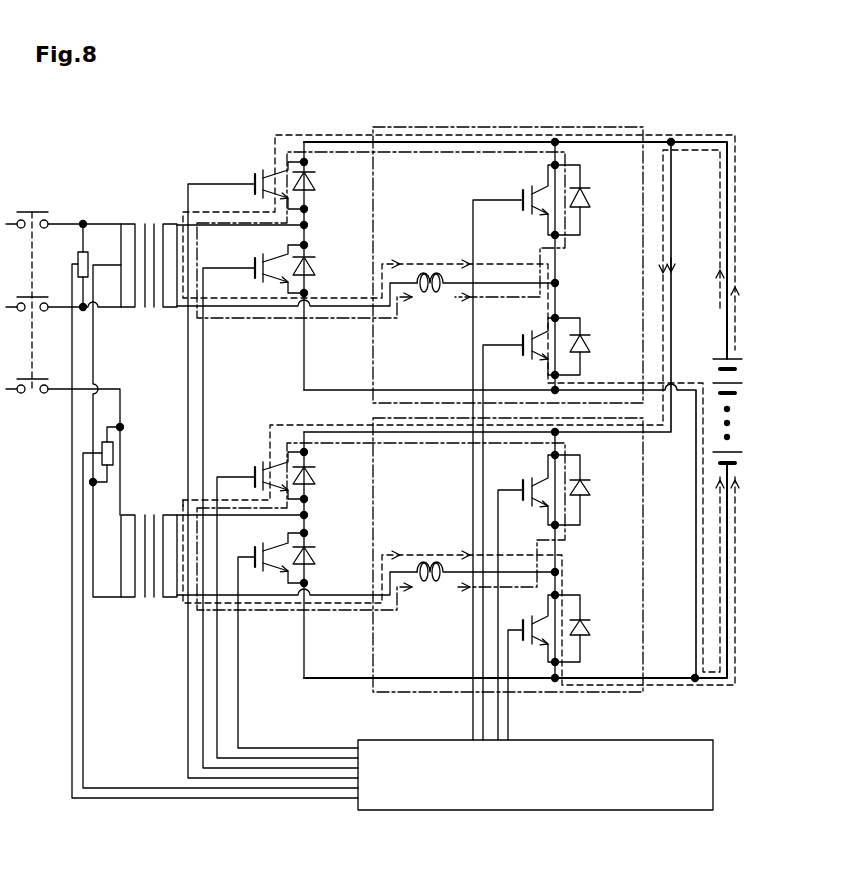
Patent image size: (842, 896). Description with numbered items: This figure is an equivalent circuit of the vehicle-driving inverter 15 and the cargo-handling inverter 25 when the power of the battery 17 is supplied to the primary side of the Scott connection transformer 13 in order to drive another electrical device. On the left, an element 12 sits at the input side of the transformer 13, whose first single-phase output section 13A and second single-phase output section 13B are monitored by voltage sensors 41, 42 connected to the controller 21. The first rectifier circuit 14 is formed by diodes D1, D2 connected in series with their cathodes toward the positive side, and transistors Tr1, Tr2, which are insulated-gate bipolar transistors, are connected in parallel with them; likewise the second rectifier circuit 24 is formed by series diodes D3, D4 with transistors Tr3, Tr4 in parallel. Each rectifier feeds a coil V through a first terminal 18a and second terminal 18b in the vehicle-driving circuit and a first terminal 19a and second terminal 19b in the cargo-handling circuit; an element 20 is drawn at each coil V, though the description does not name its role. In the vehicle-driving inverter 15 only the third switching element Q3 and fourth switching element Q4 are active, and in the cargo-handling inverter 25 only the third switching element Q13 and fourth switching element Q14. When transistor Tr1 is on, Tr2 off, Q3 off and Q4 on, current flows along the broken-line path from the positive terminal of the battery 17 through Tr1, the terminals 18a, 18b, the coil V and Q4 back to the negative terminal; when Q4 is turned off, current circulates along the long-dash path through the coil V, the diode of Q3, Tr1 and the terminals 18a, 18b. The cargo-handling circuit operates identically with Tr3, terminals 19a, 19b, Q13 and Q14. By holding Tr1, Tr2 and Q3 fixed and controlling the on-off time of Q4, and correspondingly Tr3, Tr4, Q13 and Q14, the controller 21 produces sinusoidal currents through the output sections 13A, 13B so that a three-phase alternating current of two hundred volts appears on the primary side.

The input switch 12 is at (35, 211).
The Scott connection transformer 13 is at (140, 377).
The first single-phase output section 13A is at (170, 222).
The second single-phase output section 13B is at (170, 513).
The first rectifier circuit 14 is at (278, 425).
The vehicle-driving inverter 15 is at (508, 421).
The battery 17 is at (719, 357).
The first terminal 18a is at (225, 212).
The second terminal 18b is at (258, 318).
The first terminal 19a is at (238, 507).
The second terminal 19b is at (266, 611).
The reactor coil 20 is at (344, 306).
The controller 21 is at (715, 776).
The second rectifier circuit 24 is at (293, 564).
The cargo-handling inverter 25 is at (508, 579).
The voltage sensor 41 is at (86, 250).
The voltage sensor 42 is at (114, 456).
The transistor Tr1 is at (256, 171).
The transistor Tr2 is at (288, 254).
The transistor Tr3 is at (256, 462).
The transistor Tr4 is at (288, 544).
The diode D1 is at (316, 181).
The diode D2 is at (316, 266).
The diode D3 is at (316, 476).
The diode D4 is at (316, 556).
The third switching element Q3 is at (548, 186).
The fourth switching element Q4 is at (548, 332).
The third switching element Q13 is at (548, 478).
The fourth switching element Q14 is at (533, 618).
The coil V is at (427, 268).